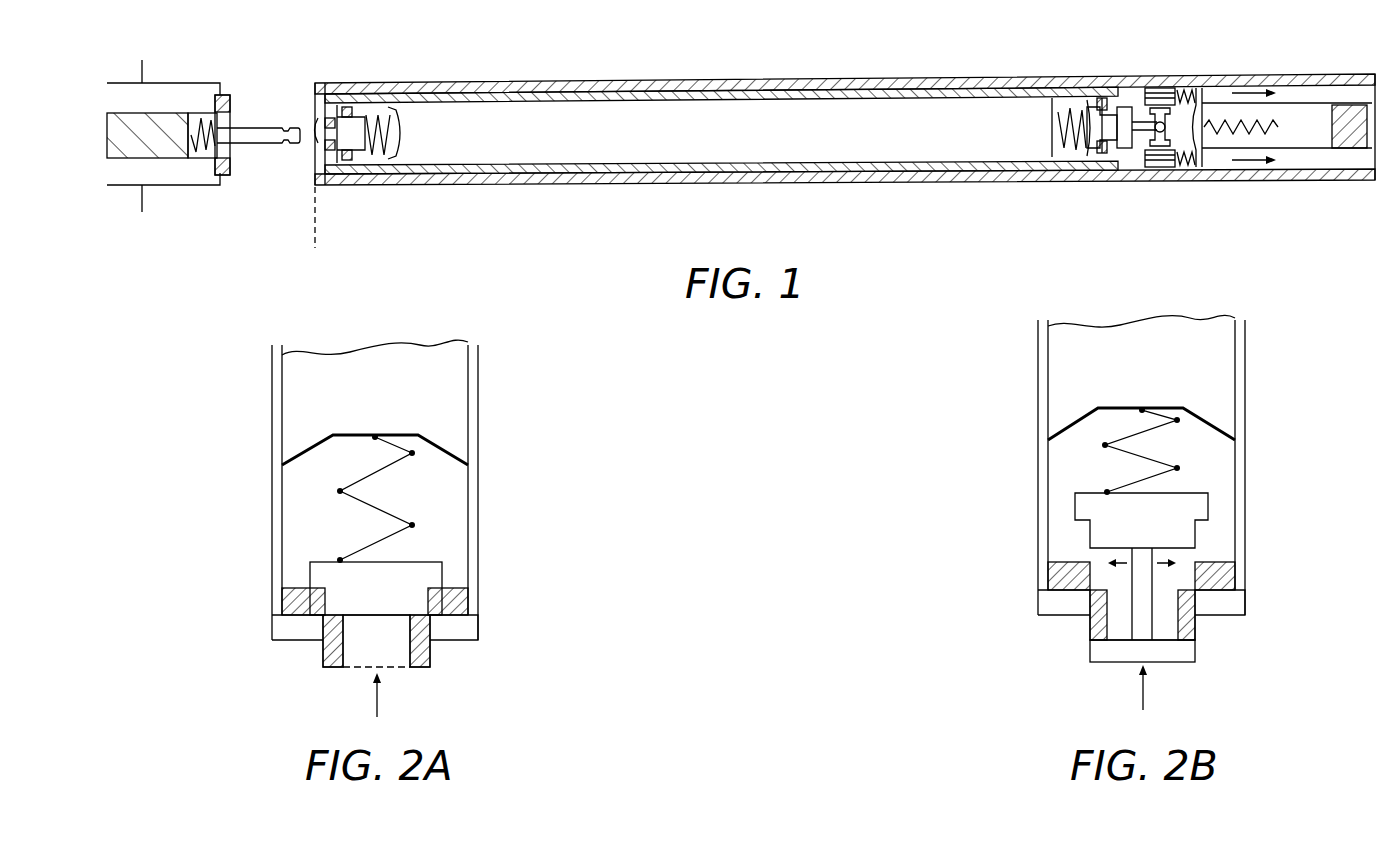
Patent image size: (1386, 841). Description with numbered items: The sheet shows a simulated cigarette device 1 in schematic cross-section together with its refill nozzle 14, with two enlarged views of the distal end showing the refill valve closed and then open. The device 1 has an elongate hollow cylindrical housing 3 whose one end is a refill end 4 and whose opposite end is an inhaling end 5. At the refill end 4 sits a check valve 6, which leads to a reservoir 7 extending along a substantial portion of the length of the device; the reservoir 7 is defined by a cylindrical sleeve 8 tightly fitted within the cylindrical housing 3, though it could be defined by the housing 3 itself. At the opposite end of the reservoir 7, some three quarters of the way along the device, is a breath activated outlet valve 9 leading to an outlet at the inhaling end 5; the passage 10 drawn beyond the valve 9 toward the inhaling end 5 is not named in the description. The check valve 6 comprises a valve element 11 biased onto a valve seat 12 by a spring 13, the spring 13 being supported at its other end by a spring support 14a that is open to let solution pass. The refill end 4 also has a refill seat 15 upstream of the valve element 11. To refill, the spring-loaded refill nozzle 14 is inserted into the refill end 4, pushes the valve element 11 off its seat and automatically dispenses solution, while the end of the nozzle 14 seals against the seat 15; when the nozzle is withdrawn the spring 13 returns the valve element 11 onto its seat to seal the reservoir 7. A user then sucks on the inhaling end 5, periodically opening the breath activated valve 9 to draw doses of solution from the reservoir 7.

In FIG. 1, the simulated cigarette device 1 is at (677, 60).
In FIG. 1, the cylindrical housing 3 is at (802, 178).
In FIG. 1, the refill end 4 is at (358, 196).
In FIG. 1, the inhaling end 5 is at (1302, 57).
In FIG. 1, the check valve 6 is at (372, 110).
In FIG. 2A, the check valve 6 is at (245, 484).
In FIG. 2B, the check valve 6 is at (1011, 456).
In FIG. 1, the reservoir 7 is at (540, 122).
In FIG. 2A, the reservoir 7 is at (383, 397).
In FIG. 2B, the reservoir 7 is at (1148, 376).
In FIG. 1, the cylindrical sleeve 8 is at (806, 96).
In FIG. 2A, the cylindrical sleeve 8 is at (478, 418).
In FIG. 2B, the cylindrical sleeve 8 is at (1245, 392).
In FIG. 1, the breath activated outlet valve 9 is at (1169, 59).
In FIG. 1, the outlet channel 10 is at (1300, 162).
In FIG. 2A, the valve element 11 is at (390, 604).
In FIG. 2B, the valve element 11 is at (1156, 534).
In FIG. 2A, the valve seat 12 is at (463, 604).
In FIG. 2B, the valve seat 12 is at (1230, 577).
In FIG. 2A, the spring 13 is at (384, 512).
In FIG. 2B, the spring 13 is at (1117, 450).
In FIG. 1, the refill nozzle 14 is at (250, 128).
In FIG. 2B, the refill nozzle 14 is at (1142, 410).
In FIG. 2A, the spring support 14a is at (398, 435).
In FIG. 2A, the refill seat 15 is at (422, 668).